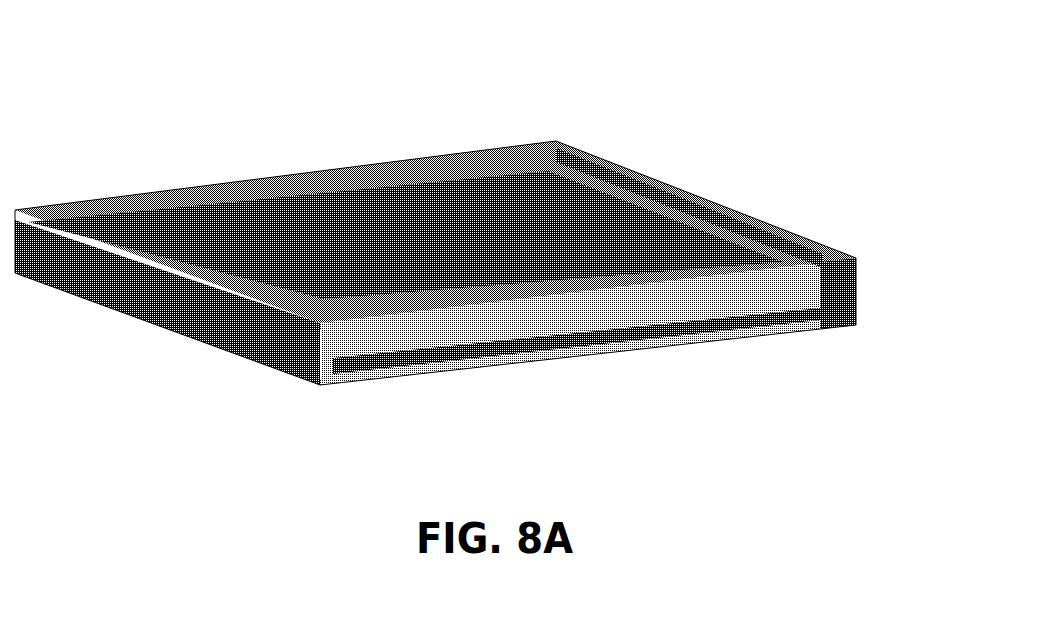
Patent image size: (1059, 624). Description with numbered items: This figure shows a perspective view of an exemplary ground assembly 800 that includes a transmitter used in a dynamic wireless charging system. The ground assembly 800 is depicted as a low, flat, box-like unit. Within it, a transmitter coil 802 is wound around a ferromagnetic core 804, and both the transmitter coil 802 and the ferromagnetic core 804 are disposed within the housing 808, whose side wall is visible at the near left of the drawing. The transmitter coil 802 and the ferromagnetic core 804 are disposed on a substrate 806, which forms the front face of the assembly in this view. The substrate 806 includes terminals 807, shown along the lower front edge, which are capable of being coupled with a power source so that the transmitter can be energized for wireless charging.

The ground assembly 800 is at (728, 167).
The transmitter coil 802 is at (222, 235).
The ferromagnetic core 804 is at (410, 197).
The substrate 806 is at (688, 297).
The terminals 807 is at (573, 320).
The housing 808 is at (273, 348).